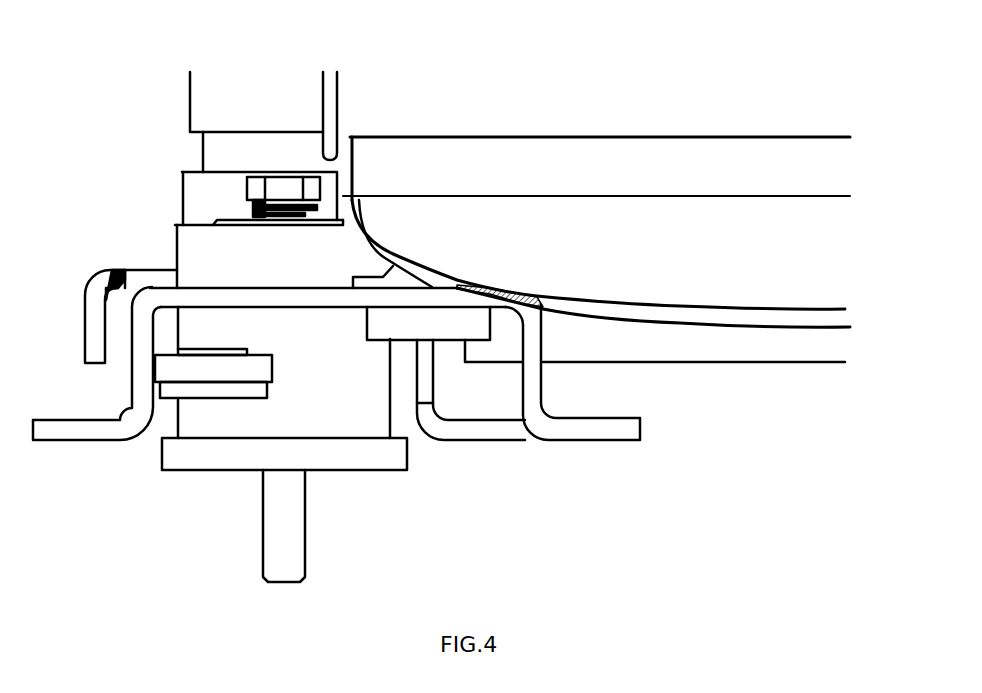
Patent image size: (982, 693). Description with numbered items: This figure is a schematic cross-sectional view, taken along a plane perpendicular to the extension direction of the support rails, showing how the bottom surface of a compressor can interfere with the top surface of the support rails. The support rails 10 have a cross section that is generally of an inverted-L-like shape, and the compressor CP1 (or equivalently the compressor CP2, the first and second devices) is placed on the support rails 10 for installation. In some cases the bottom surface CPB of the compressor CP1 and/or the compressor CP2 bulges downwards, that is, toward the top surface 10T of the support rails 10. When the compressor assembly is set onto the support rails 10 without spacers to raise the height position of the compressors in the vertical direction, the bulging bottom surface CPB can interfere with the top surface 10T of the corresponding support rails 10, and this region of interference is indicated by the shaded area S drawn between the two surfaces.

The support rails 10 is at (594, 430).
The top surface of the support rails 10T is at (253, 282).
The compressor CP1 is at (596, 185).
The compressor CP2 is at (585, 162).
The bottom surface of the compressor CPB is at (770, 317).
The shaded area S is at (521, 277).